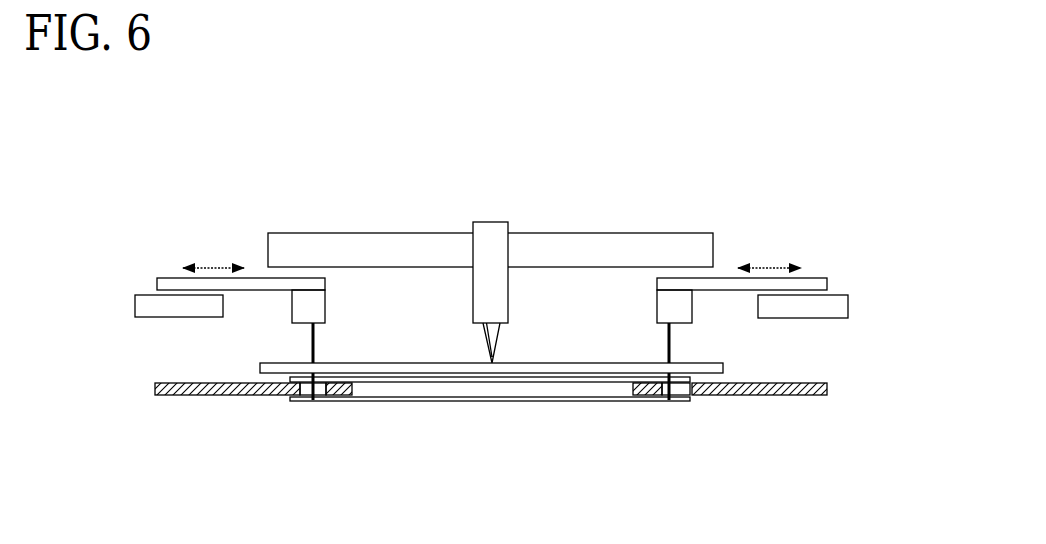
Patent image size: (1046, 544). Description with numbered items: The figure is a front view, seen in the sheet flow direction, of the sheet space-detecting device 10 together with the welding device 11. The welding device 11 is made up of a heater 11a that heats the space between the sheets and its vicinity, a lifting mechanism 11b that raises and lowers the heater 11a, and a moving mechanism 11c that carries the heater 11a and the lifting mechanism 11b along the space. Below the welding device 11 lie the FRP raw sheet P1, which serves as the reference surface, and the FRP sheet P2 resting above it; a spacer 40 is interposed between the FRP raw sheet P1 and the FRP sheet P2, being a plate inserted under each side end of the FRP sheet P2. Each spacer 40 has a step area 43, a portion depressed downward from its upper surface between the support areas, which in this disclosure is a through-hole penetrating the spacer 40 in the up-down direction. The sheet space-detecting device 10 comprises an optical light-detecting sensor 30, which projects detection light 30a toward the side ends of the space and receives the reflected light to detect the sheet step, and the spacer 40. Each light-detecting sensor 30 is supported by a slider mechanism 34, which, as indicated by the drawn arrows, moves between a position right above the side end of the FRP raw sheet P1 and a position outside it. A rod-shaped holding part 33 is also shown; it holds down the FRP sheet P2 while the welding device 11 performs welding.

The sheet space-detecting device 10 is at (714, 228).
The welding device 11 is at (656, 228).
The heater 11a is at (499, 342).
The lifting mechanism 11b is at (508, 287).
The moving mechanism 11c is at (578, 243).
The light-detecting sensor 30 is at (292, 313).
The detection light 30a is at (315, 338).
The holding part 33 is at (402, 362).
The slider mechanism 34 is at (152, 287).
The spacer 40 is at (225, 396).
The step area 43 is at (307, 396).
The FRP raw sheet P1 is at (503, 402).
The FRP sheet P2 is at (585, 383).